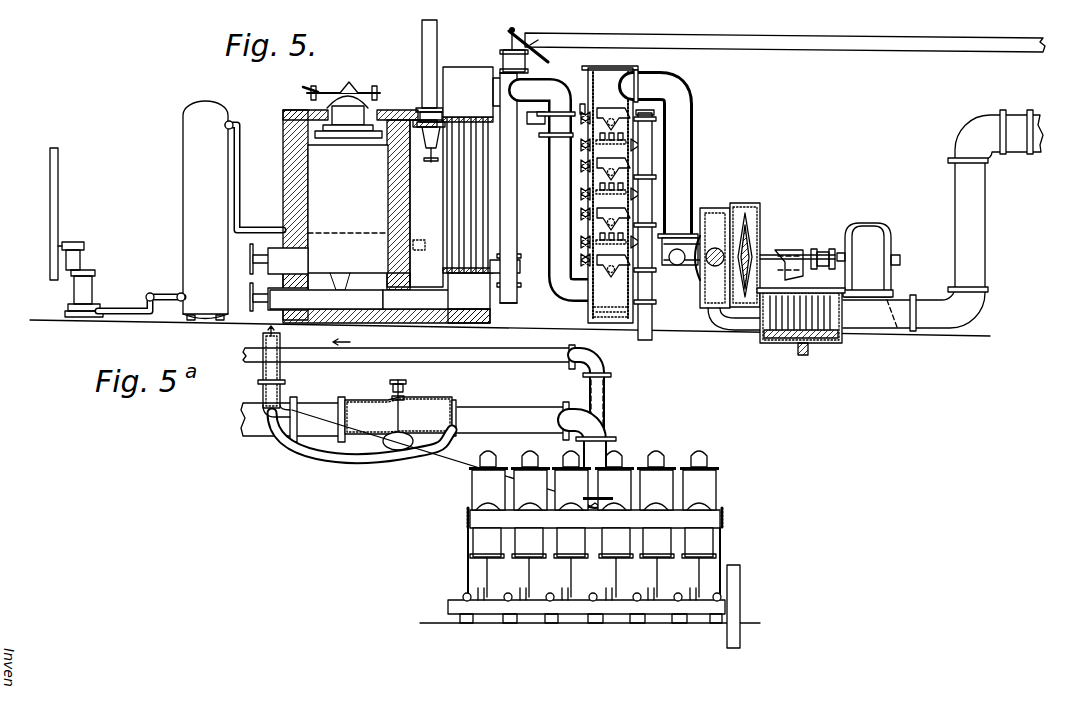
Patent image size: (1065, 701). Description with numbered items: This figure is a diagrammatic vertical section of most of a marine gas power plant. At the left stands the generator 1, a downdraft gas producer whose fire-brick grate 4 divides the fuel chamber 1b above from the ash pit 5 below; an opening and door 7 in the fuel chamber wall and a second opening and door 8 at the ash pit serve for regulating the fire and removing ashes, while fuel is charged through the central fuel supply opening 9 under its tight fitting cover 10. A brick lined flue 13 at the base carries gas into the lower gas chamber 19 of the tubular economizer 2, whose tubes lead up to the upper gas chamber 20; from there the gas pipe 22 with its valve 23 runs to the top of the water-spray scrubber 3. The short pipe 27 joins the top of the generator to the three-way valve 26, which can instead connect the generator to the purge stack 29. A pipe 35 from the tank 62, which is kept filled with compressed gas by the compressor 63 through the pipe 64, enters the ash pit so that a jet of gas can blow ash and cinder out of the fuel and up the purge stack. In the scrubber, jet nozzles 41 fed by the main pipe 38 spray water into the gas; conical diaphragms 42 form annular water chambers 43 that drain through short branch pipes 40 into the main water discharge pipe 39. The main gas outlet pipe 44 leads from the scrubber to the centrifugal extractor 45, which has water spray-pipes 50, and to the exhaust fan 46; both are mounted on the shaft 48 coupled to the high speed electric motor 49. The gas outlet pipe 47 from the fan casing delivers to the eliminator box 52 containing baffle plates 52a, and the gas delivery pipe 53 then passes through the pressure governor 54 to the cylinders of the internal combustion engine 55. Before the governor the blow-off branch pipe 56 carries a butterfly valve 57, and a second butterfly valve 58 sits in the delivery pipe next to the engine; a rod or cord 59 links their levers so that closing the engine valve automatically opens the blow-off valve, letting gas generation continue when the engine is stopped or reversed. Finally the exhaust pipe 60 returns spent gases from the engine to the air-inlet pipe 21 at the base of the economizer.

In FIG. 5, the generator 1 is at (290, 110).
In FIG. 5, the fuel chamber 1b is at (348, 210).
In FIG. 5, the tubular economizer 2 is at (468, 158).
In FIG. 5, the water-spray scrubber 3 is at (610, 185).
In FIG. 5, the fire-brick grate 4 is at (348, 217).
In FIG. 5, the ash pit 5 is at (326, 299).
In FIG. 5, the opening and door 7 is at (279, 254).
In FIG. 5, the opening and door 8 is at (279, 294).
In FIG. 5, the central fuel supply opening 9 is at (347, 112).
In FIG. 5, the cover 10 is at (345, 98).
In FIG. 5, the brick lined flue 13 is at (416, 301).
In FIG. 5, the lower gas chamber 19 is at (469, 298).
In FIG. 5, the upper gas chamber 20 is at (472, 92).
In FIG. 5, the air-inlet pipe 21 is at (520, 278).
In FIG. 5, the gas pipe 22 is at (554, 189).
In FIG. 5, the valve 23 is at (508, 32).
In FIG. 5, the three-way valve 26 is at (423, 150).
In FIG. 5, the short pipe 27 is at (398, 120).
In FIG. 5, the purge stack 29 is at (424, 30).
In FIG. 5, the pipe 35 is at (335, 187).
In FIG. 5, the main pipe 38 is at (577, 97).
In FIG. 5, the main water discharge pipe 39 is at (658, 292).
In FIG. 5, the short branch pipes 40 is at (656, 177).
In FIG. 5, the jet nozzles 41 is at (588, 228).
In FIG. 5, the conical diaphragms 42 is at (592, 128).
In FIG. 5, the annular water chambers 43 is at (630, 212).
In FIG. 5, the main gas outlet pipe 44 is at (686, 90).
In FIG. 5, the centrifugal extractor 45 is at (728, 205).
In FIG. 5, the exhaust fan 46 is at (757, 232).
In FIG. 5, the gas outlet pipe 47 is at (715, 320).
In FIG. 5, the shaft 48 is at (814, 250).
In FIG. 5, the high speed electric motor 49 is at (868, 232).
In FIG. 5, the water spray-pipes 50 is at (730, 180).
In FIG. 5, the eliminator box 52 is at (816, 343).
In FIG. 5, the baffle plates 52a is at (790, 346).
In FIG. 5, the gas delivery pipe 53 is at (984, 234).
In FIG. 5A, the gas delivery pipe 53 is at (498, 414).
In FIG. 5A, the pressure governor 54 is at (422, 408).
In FIG. 5A, the internal combustion engine 55 is at (480, 540).
In FIG. 5A, the blow-off branch pipe 56 is at (281, 376).
In FIG. 5A, the butterfly valve 57 is at (283, 410).
In FIG. 5A, the butterfly valve 58 is at (582, 495).
In FIG. 5A, the rod or cord 59 is at (432, 470).
In FIG. 5, the exhaust pipe 60 is at (772, 158).
In FIG. 5A, the exhaust pipe 60 is at (427, 417).
In FIG. 5, the tank 62 is at (205, 210).
In FIG. 5, the compressor 63 is at (82, 232).
In FIG. 5, the pipe 64 is at (141, 297).